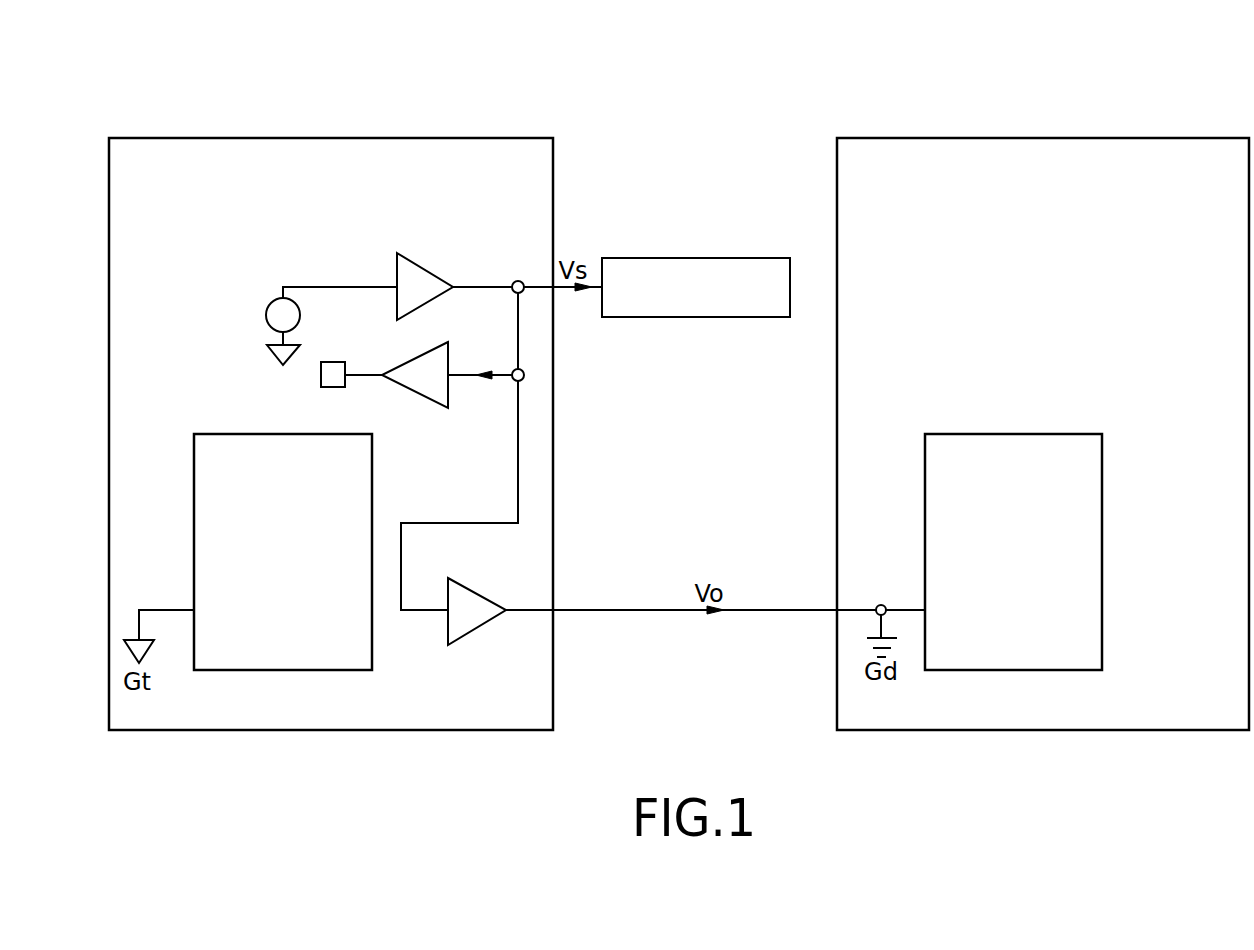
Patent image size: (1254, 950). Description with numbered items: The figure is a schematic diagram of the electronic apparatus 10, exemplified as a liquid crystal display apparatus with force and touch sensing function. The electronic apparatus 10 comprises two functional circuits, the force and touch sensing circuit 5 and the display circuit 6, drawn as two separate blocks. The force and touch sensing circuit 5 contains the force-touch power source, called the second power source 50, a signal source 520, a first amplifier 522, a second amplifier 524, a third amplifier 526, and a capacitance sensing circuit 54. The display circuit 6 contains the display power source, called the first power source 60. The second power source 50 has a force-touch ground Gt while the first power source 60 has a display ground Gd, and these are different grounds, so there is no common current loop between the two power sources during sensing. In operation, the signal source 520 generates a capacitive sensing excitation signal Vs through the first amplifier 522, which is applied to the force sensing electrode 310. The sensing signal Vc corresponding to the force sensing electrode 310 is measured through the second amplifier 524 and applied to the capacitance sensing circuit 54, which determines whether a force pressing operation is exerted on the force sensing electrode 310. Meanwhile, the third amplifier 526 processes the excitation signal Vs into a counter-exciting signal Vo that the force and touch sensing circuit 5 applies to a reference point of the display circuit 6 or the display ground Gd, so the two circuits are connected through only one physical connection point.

The electronic apparatus 10 is at (707, 48).
The force and touch sensing circuit 5 is at (316, 144).
The display circuit 6 is at (1043, 145).
The second power source 50 is at (283, 440).
The capacitance sensing circuit 54 is at (336, 362).
The first power source 60 is at (1015, 440).
The force sensing electrode 310 is at (690, 265).
The signal source 520 is at (268, 311).
The first amplifier 522 is at (420, 280).
The second amplifier 524 is at (425, 385).
The third amplifier 526 is at (468, 622).